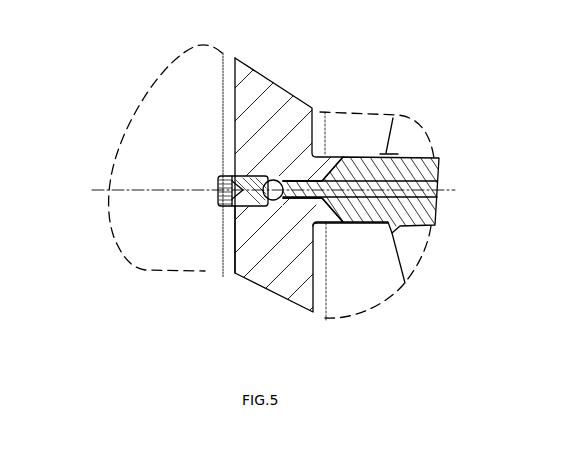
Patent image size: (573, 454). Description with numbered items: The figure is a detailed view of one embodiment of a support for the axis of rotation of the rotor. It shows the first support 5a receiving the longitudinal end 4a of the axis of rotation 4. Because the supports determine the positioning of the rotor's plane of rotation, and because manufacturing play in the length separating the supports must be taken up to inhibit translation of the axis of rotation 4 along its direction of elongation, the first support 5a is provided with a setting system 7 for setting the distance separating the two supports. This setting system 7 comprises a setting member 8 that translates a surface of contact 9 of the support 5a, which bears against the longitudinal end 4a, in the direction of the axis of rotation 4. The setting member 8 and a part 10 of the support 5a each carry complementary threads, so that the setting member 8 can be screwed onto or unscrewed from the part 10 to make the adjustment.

The axis of rotation 4 is at (436, 183).
The longitudinal end of the axis of rotation 4a is at (297, 197).
The first support 5a is at (215, 212).
The setting system 7 is at (222, 164).
The setting member 8 is at (238, 208).
The surface of contact 9 is at (277, 178).
The part of the support 10 is at (269, 203).